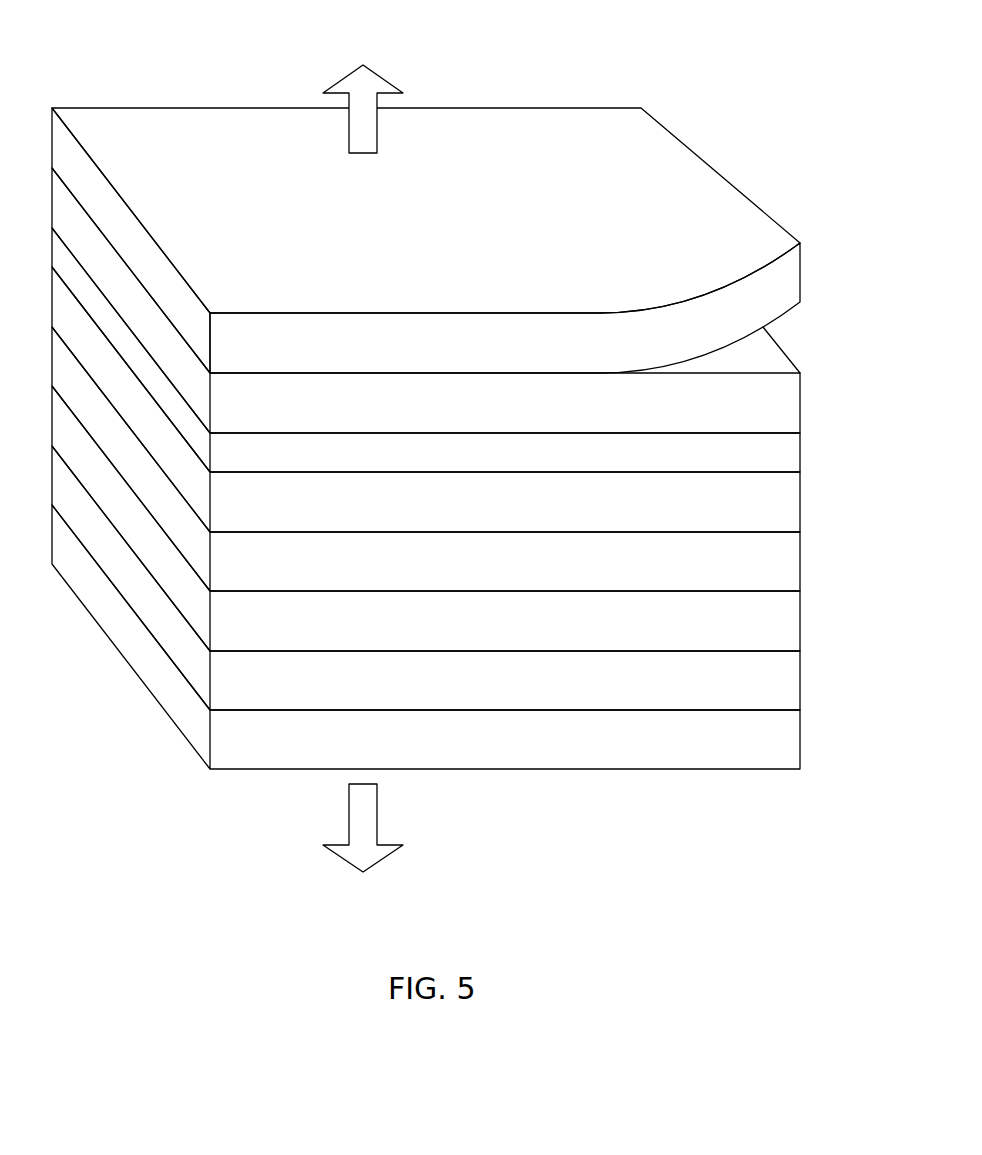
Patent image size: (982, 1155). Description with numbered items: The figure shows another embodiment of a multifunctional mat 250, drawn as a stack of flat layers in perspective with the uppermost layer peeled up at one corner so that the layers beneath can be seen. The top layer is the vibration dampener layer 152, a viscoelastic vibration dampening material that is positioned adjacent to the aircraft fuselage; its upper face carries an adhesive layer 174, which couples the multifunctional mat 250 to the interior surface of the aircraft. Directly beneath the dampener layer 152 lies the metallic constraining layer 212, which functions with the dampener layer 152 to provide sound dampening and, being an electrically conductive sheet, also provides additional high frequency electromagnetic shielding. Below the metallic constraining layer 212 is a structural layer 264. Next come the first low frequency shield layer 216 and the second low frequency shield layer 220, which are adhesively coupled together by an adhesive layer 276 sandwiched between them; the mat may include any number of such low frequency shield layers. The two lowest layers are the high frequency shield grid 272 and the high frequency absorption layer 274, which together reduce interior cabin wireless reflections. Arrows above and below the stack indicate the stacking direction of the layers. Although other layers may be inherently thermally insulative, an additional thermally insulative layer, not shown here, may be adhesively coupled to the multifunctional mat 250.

The multifunctional mat 250 is at (592, 48).
The adhesive layer 174 is at (703, 178).
The vibration dampener layer 152 is at (777, 222).
The metallic constraining layer 212 is at (800, 404).
The structural layer 264 is at (800, 452).
The first low frequency shield layer 216 is at (800, 501).
The adhesive layer 276 is at (800, 561).
The second low frequency shield layer 220 is at (800, 621).
The high frequency shield grid 272 is at (800, 680).
The high frequency absorption layer 274 is at (800, 740).